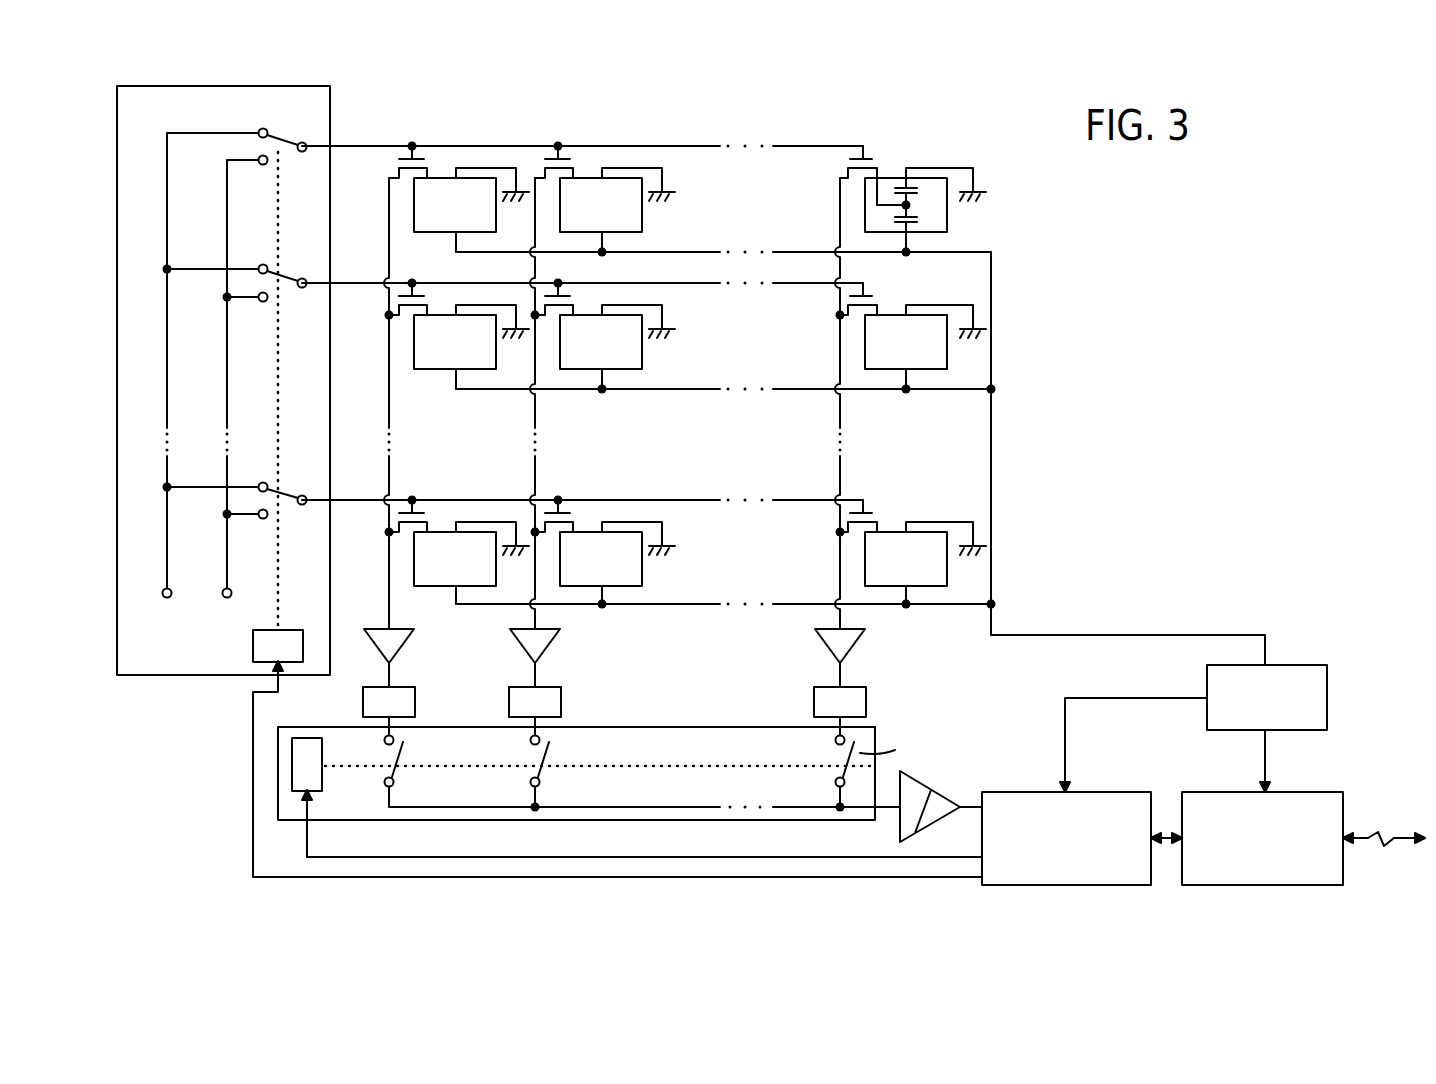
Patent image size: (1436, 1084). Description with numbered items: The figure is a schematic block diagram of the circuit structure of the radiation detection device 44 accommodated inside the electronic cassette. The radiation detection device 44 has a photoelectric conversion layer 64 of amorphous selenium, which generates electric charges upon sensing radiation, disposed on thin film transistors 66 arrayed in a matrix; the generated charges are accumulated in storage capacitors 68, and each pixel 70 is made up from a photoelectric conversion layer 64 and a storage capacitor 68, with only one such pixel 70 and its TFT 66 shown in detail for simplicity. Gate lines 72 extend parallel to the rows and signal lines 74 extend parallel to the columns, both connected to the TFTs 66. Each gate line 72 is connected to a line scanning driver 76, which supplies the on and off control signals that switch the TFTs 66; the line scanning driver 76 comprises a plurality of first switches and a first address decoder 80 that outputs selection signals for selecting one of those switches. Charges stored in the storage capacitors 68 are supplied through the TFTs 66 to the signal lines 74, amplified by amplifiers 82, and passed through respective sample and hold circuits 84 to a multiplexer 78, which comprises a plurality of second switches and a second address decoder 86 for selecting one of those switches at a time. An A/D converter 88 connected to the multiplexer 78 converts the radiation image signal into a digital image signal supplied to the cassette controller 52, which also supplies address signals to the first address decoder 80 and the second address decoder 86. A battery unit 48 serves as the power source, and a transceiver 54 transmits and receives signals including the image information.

The radiation detection device 44 is at (649, 345).
The battery unit 48 is at (1300, 662).
The cassette controller 52 is at (1130, 790).
The transceiver 54 is at (1315, 790).
The photoelectric conversion layer 64 is at (920, 220).
The thin film transistor 66 is at (846, 164).
The storage capacitor 68 is at (924, 186).
The pixel 70 is at (761, 192).
The gate line 72 is at (807, 143).
The signal line 74 is at (840, 205).
The line scanning driver 76 is at (333, 112).
The multiplexer 78 is at (720, 718).
The first address decoder 80 is at (253, 648).
The amplifier 82 is at (552, 648).
The sample and hold circuit 84 is at (562, 707).
The second address decoder 86 is at (324, 775).
The A/D converter 88 is at (948, 796).